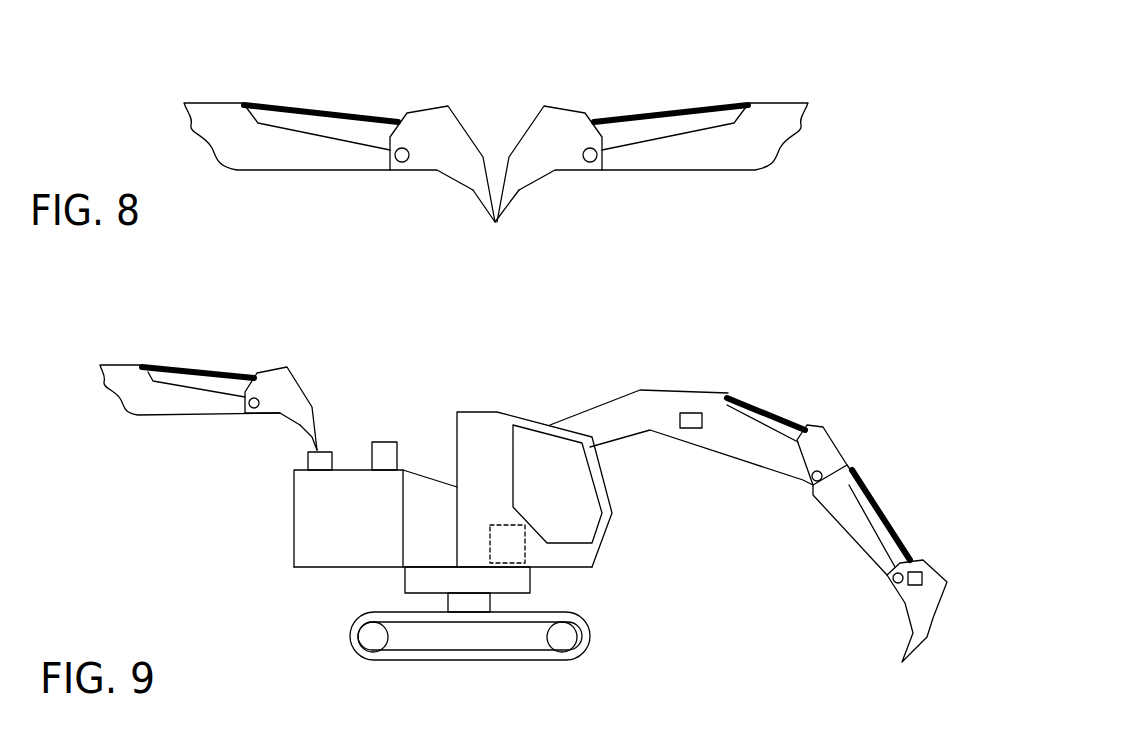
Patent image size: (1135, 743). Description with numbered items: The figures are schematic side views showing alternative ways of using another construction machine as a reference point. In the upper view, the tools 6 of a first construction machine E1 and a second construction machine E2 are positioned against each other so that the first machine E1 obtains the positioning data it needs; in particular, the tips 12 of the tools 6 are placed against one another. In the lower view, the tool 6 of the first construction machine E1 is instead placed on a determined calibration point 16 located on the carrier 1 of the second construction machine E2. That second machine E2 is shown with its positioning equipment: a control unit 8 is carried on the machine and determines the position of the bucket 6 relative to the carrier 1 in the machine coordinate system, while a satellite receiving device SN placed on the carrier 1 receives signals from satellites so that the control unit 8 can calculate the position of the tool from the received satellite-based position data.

In FIG. 9, the carrier 1 is at (315, 550).
In FIG. 8, the bucket 6 is at (452, 160).
In FIG. 9, the bucket 6 is at (287, 393).
In FIG. 9, the control unit 8 is at (522, 550).
In FIG. 8, the tip 12 is at (497, 226).
In FIG. 9, the tip 12 is at (312, 447).
In FIG. 9, the calibration point 16 is at (322, 458).
In FIG. 9, the satellite receiving device SN is at (386, 442).
In FIG. 8, the first construction machine E1 is at (315, 60).
In FIG. 9, the first construction machine E1 is at (192, 312).
In FIG. 8, the second construction machine E2 is at (693, 61).
In FIG. 9, the second construction machine E2 is at (550, 358).